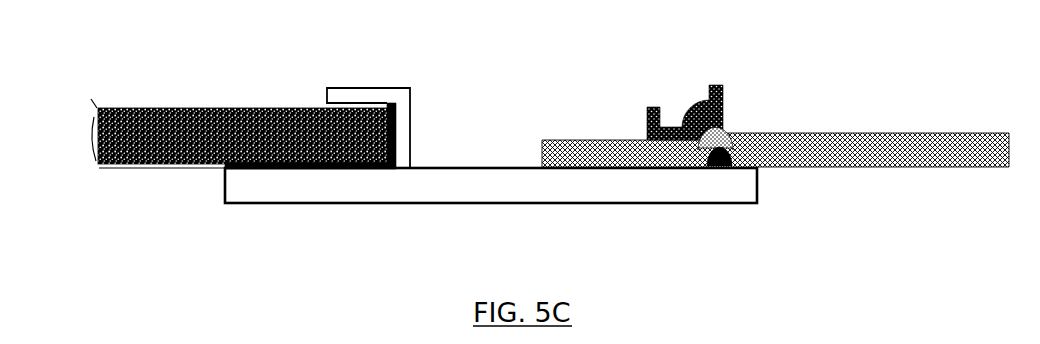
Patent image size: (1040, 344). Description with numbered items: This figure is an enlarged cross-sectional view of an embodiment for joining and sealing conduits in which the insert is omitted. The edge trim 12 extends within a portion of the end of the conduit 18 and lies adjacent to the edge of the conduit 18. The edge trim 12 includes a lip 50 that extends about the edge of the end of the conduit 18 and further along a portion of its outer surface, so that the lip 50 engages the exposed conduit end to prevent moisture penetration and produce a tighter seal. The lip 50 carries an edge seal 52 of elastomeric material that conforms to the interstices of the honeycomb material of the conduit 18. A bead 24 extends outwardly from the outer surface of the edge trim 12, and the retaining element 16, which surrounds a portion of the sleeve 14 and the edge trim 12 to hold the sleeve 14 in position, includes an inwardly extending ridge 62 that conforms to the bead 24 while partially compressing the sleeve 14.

The edge trim 12 is at (367, 203).
The sleeve 14 is at (833, 134).
The retaining element 16 is at (707, 112).
The conduit 18 is at (238, 110).
The bead 24 is at (725, 167).
The lip 50 is at (412, 122).
The edge seal 52 is at (338, 167).
The inwardly extending ridge 62 is at (730, 130).